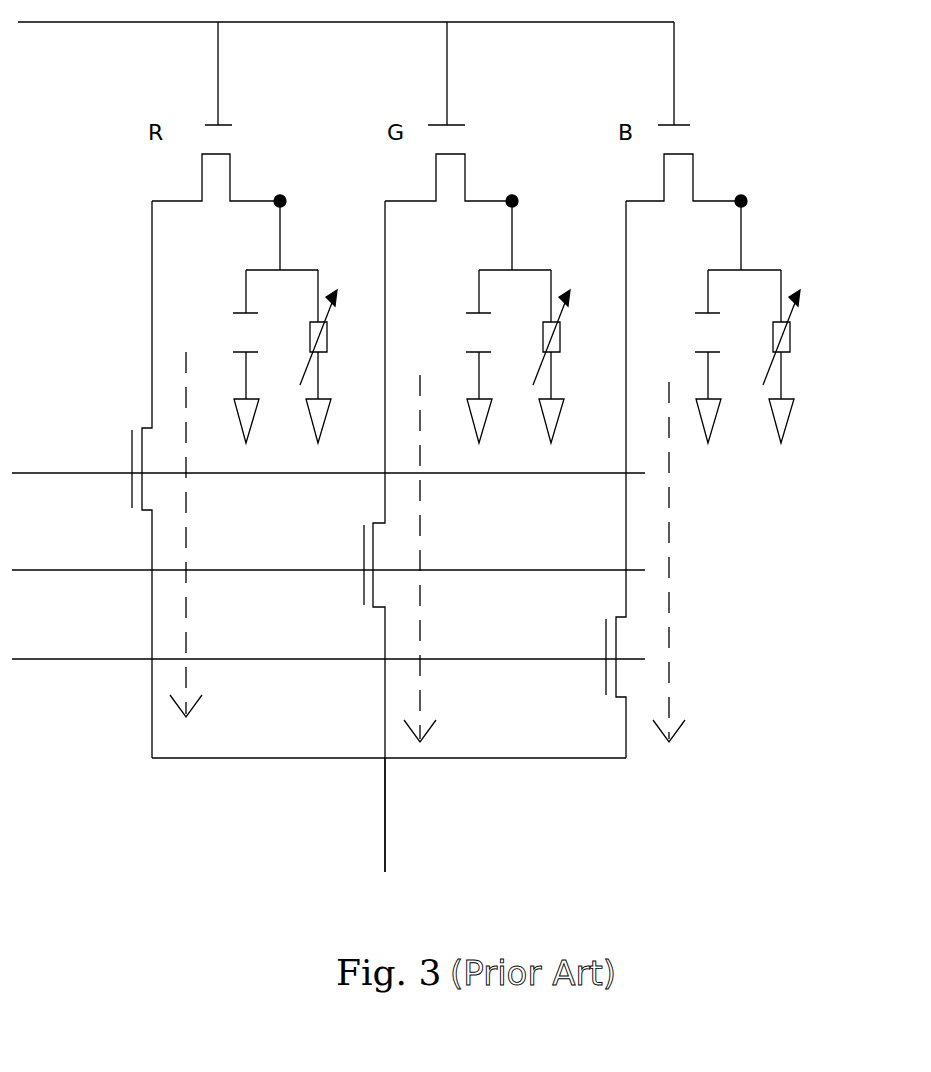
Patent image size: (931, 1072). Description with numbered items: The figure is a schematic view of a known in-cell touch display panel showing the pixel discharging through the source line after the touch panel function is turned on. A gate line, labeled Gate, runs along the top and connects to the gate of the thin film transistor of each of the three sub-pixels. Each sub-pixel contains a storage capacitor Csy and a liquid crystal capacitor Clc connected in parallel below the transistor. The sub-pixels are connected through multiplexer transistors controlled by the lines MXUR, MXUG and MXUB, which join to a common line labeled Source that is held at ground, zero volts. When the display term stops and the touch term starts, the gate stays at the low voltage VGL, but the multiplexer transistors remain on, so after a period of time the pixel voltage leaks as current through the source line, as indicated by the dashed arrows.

The gate Gate is at (346, 37).
The storage capacitor Csy is at (495, 356).
The liquid crystal capacitor Clc is at (563, 356).
The red sub-pixel multiplex control line MXUR is at (328, 469).
The green sub-pixel multiplex control line MXUG is at (328, 565).
The blue sub-pixel multiplex control line MXUB is at (328, 657).
The source Source is at (428, 815).